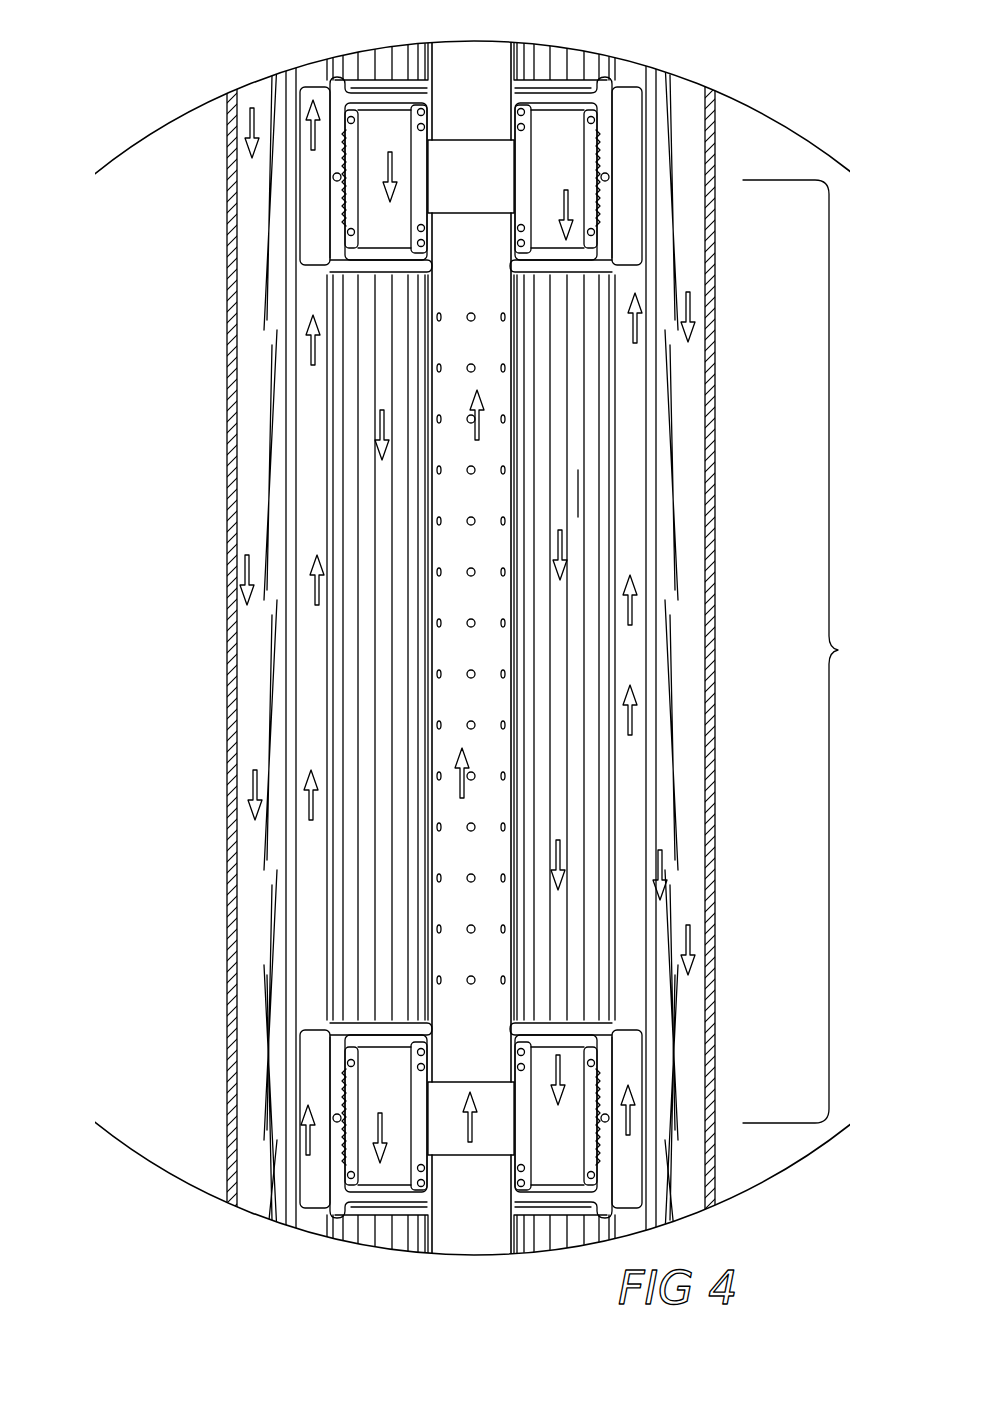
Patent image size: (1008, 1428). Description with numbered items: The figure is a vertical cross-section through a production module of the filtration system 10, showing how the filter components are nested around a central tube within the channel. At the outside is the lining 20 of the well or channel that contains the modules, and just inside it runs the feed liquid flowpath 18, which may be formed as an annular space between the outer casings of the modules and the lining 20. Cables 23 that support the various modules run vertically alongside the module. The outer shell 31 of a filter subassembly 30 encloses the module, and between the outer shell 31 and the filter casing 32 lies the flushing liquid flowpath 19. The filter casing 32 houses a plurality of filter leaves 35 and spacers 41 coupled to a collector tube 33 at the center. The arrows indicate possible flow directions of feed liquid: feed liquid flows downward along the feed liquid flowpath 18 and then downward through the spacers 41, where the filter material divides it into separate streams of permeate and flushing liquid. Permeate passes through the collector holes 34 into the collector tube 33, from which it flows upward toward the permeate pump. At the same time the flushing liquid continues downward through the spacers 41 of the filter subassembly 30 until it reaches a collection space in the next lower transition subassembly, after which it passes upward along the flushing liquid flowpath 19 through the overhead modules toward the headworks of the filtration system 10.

The filtration system 10 is at (125, 548).
The feed liquid flowpath 18 is at (252, 372).
The flushing liquid flowpath 19 is at (310, 470).
The lining 20 is at (228, 222).
The cables 23 is at (265, 290).
The filter subassembly 30 is at (838, 650).
The outer shell 31 is at (287, 765).
The filter casing 32 is at (328, 720).
The collector tube 33 is at (519, 402).
The collector holes 34 is at (476, 468).
The filter leaves 35 is at (580, 493).
The spacers 41 is at (360, 555).